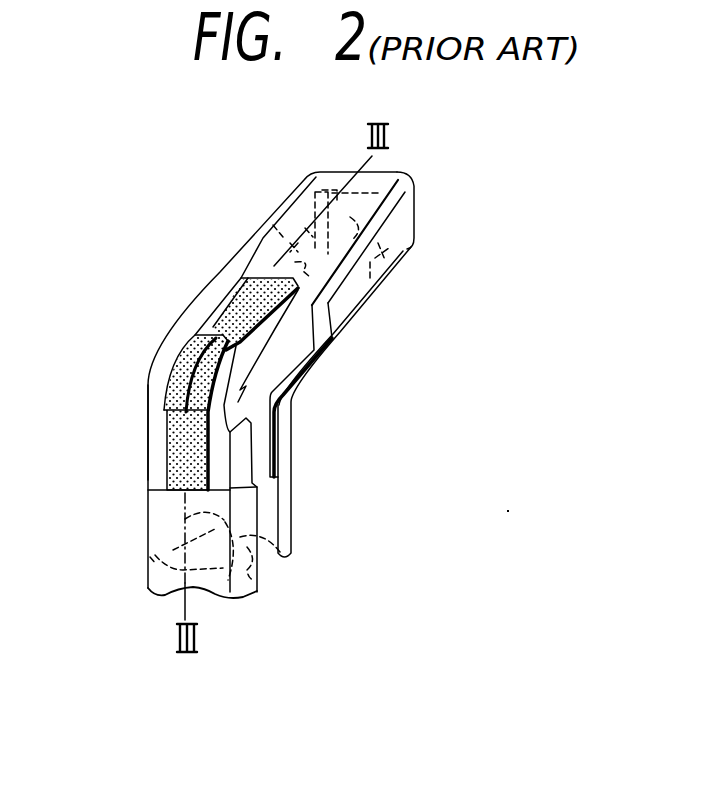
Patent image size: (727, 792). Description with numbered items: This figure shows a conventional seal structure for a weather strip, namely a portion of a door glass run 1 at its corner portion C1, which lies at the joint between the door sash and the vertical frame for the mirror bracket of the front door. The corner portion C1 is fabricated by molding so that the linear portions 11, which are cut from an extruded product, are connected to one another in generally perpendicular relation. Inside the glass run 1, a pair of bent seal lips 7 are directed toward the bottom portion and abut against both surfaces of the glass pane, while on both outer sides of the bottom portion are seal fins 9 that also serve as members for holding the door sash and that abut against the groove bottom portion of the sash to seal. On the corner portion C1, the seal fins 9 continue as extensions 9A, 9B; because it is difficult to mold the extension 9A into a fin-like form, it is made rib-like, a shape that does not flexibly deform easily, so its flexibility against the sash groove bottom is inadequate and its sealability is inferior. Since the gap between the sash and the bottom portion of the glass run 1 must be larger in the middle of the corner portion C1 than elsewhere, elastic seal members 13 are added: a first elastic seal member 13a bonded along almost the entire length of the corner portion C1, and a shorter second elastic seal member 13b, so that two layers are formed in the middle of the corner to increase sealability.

The glass run 1 is at (401, 167).
The bent seal lips 7 is at (300, 250).
The seal fins 9 is at (291, 189).
The extension 9A is at (275, 351).
The extension 9B is at (243, 460).
The linear portions 11 is at (357, 317).
The elastic seal members 13 is at (190, 334).
The first elastic seal member 13a is at (223, 328).
The second elastic seal member 13b is at (168, 368).
The corner portion C1 is at (137, 426).